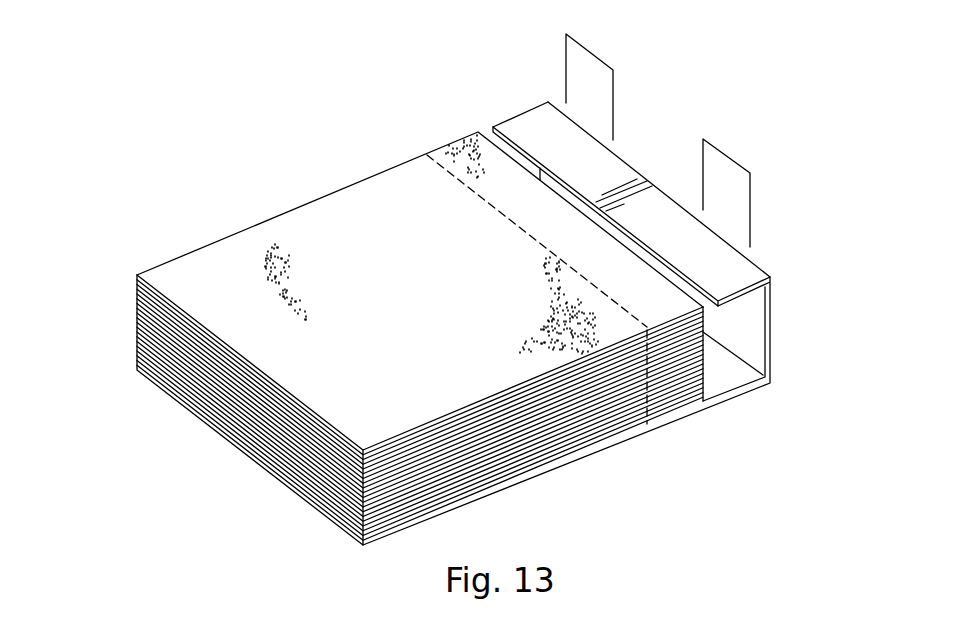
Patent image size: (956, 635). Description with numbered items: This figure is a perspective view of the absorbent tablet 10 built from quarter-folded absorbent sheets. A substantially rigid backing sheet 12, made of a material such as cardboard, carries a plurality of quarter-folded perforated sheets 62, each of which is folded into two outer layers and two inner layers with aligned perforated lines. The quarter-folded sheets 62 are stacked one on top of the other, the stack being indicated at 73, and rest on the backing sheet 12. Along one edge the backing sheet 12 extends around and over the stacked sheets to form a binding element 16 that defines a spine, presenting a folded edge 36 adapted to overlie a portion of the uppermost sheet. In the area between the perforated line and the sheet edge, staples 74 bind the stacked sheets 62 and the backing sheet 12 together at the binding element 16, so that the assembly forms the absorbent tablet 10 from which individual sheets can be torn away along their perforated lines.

The absorbent tablet 10 is at (804, 244).
The backing sheet 12 is at (731, 400).
The binding element 16 is at (524, 114).
The folded edge 36 is at (711, 262).
The quarter-folded perforated sheet 62 is at (406, 306).
The stack of quarter-folded sheets 73 is at (137, 330).
The staples 74 is at (613, 70).